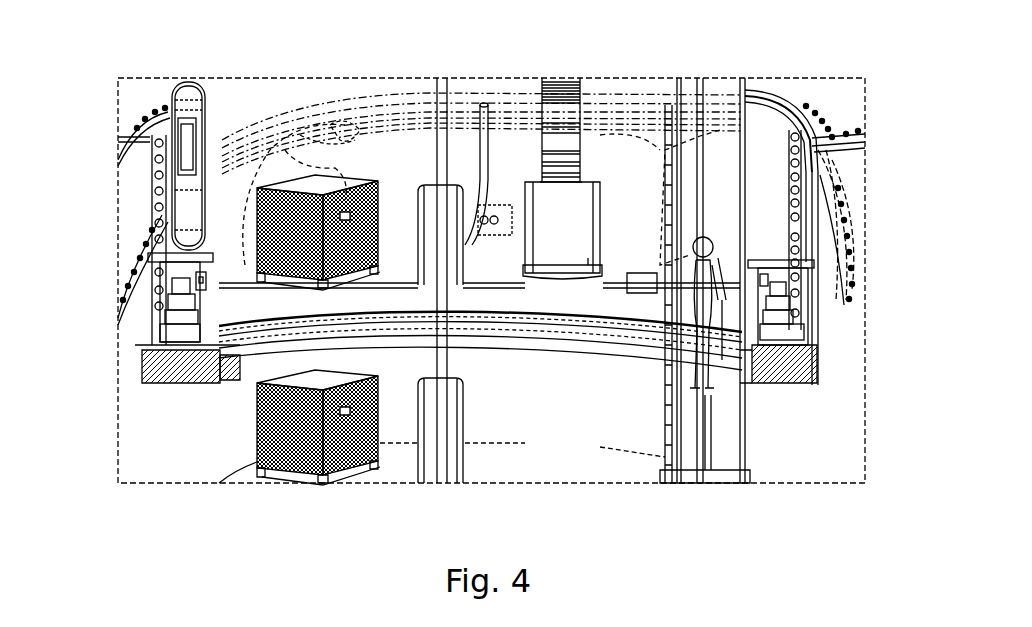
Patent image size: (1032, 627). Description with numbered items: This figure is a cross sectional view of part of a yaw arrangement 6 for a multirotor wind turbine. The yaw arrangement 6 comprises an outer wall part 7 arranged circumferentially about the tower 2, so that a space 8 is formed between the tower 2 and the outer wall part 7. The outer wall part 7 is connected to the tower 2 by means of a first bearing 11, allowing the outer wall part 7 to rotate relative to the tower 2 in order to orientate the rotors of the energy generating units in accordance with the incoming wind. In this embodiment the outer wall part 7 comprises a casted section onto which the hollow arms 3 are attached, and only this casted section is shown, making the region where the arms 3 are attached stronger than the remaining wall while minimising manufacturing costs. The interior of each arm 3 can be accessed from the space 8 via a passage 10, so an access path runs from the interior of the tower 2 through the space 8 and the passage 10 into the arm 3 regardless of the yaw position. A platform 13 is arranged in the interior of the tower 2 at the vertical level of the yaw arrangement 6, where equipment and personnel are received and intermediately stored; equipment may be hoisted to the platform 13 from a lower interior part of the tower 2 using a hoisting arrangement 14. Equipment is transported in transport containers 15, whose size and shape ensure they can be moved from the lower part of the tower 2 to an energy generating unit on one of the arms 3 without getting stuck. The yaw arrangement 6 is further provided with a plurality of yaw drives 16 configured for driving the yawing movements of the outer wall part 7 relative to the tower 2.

The tower 2 is at (745, 97).
The arm 3 is at (827, 307).
The yaw arrangement 6 is at (102, 118).
The outer wall part 7 is at (813, 313).
The space 8 is at (763, 200).
The passage 10 is at (293, 140).
The first bearing 11 is at (758, 378).
The platform 13 is at (510, 272).
The hoisting arrangement 14 is at (440, 143).
The transport container 15 is at (182, 97).
The yaw drive 16 is at (790, 306).